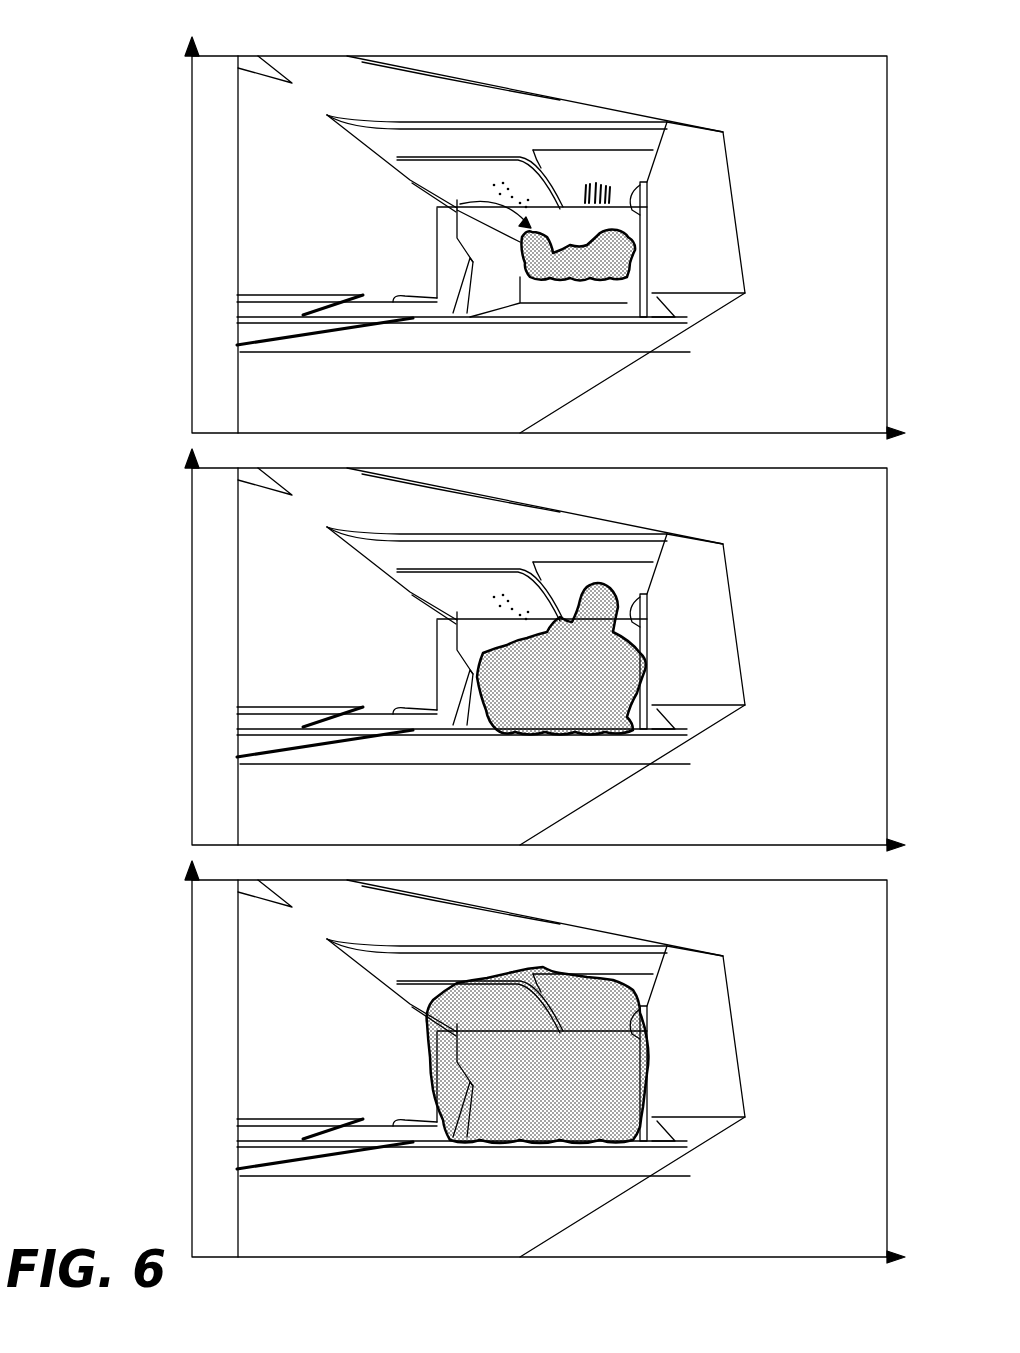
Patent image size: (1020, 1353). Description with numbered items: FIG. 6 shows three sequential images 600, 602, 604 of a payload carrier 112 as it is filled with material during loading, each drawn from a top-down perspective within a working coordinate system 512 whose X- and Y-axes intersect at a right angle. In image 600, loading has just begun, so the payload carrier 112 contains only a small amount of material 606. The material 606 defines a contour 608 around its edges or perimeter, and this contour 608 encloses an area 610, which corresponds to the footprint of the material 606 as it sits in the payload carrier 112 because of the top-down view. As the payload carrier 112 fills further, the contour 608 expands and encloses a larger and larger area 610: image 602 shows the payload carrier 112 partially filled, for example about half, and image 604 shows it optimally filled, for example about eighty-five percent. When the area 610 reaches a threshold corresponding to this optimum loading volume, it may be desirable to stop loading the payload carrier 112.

The payload carrier 112 is at (557, 142).
The working coordinate system 512 is at (190, 70).
The image 600 is at (166, 160).
The image 602 is at (166, 550).
The image 604 is at (166, 974).
The material 606 is at (453, 205).
The contour 608 is at (647, 270).
The area 610 is at (647, 223).